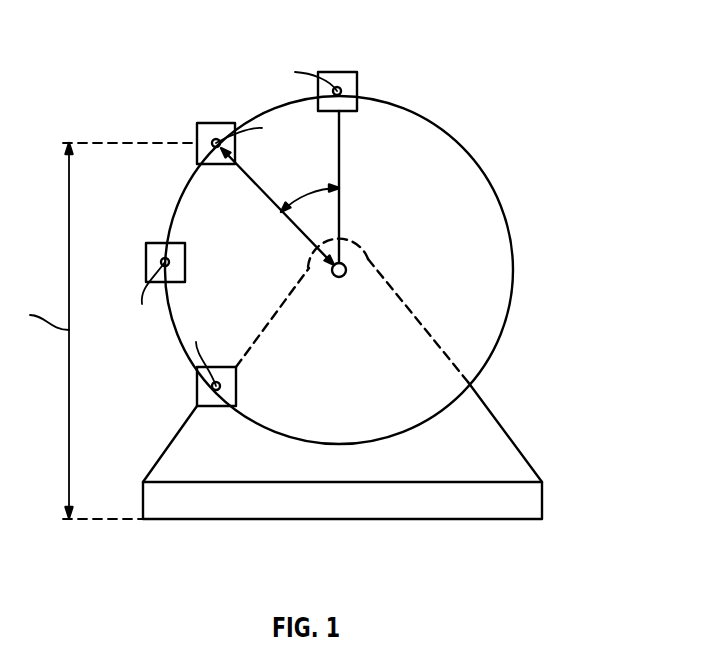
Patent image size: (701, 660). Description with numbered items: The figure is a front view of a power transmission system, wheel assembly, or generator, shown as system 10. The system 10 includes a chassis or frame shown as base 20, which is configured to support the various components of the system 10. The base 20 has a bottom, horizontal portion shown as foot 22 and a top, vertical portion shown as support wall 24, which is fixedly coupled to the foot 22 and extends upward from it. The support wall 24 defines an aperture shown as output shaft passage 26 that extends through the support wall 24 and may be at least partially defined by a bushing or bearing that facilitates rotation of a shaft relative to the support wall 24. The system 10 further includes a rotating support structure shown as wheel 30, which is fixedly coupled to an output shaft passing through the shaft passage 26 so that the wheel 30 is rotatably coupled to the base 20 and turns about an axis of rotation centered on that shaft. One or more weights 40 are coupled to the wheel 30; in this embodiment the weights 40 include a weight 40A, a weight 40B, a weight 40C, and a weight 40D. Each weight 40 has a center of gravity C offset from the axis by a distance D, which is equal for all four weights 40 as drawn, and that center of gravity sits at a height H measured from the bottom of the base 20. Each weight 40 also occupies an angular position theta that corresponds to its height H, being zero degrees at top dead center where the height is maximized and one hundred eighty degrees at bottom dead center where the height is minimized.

The system 10 is at (573, 57).
The base 20 is at (547, 512).
The foot 22 is at (438, 497).
The support wall 24 is at (485, 433).
The output shaft passage 26 is at (348, 268).
The wheel 30 is at (442, 148).
The weights 40 is at (343, 50).
The weight 40A is at (357, 88).
The weight 40B is at (211, 123).
The weight 40C is at (158, 243).
The weight 40D is at (236, 385).